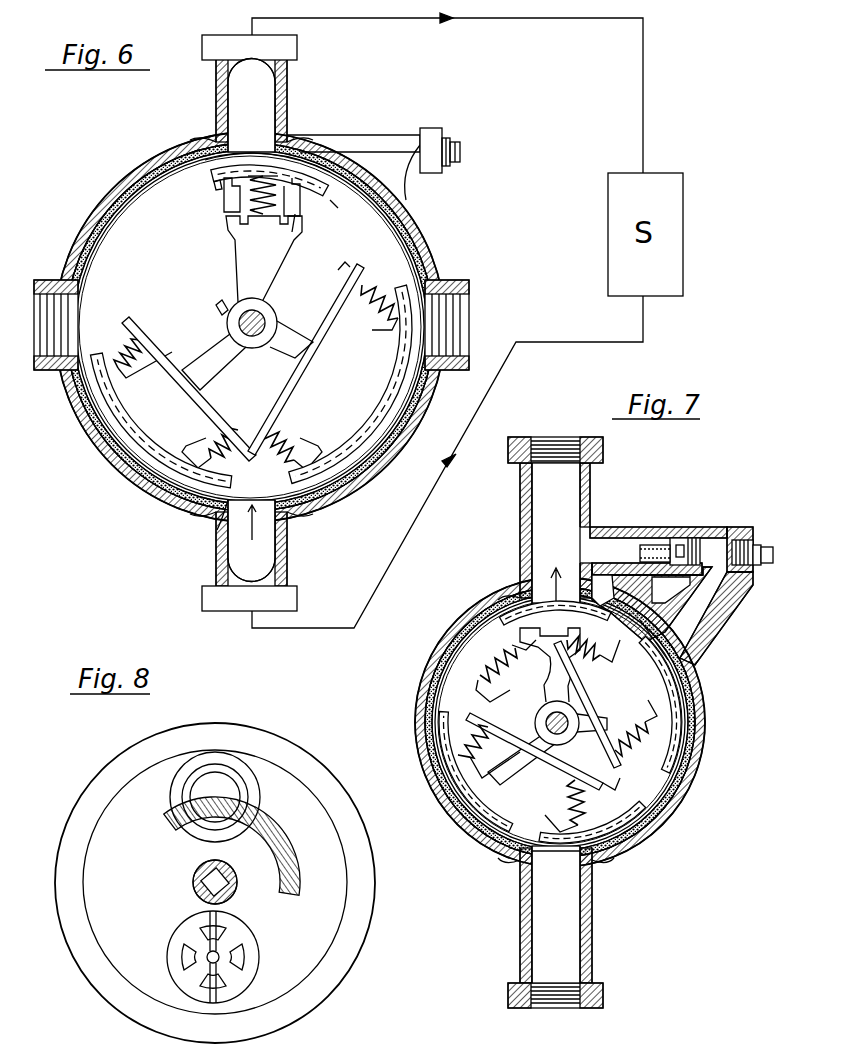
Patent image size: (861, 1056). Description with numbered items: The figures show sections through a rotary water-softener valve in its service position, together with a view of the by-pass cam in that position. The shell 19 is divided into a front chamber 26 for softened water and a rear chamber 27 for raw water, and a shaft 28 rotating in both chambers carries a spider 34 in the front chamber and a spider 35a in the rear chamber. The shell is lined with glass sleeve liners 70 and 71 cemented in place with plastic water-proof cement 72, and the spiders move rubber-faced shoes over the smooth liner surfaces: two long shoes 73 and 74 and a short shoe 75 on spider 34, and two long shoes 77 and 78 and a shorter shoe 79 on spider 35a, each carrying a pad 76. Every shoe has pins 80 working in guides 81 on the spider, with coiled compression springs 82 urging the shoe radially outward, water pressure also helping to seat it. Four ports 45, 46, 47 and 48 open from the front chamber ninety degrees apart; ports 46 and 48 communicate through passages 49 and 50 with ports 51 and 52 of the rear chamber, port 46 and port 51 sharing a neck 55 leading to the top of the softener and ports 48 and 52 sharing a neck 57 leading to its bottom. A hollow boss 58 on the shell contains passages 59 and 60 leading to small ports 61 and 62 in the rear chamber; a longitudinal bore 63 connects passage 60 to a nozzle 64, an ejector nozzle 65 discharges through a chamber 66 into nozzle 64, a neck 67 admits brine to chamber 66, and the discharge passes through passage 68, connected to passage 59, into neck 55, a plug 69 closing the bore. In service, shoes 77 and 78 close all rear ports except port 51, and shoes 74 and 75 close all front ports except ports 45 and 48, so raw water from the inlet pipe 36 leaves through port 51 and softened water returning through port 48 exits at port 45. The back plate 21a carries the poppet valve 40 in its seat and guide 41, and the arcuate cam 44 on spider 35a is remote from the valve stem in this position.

In FIG. 6, the shell 19 is at (428, 252).
In FIG. 7, the shell 19 is at (694, 706).
In FIG. 8, the back plate 21a is at (345, 978).
In FIG. 6, the front chamber 26 is at (250, 327).
In FIG. 7, the rear chamber 27 is at (564, 715).
In FIG. 6, the shaft 28 is at (258, 320).
In FIG. 7, the shaft 28 is at (565, 730).
In FIG. 8, the shaft 28 is at (232, 890).
In FIG. 6, the spider 34 is at (262, 268).
In FIG. 7, the spider 35a is at (540, 708).
In FIG. 8, the spider 35a is at (195, 892).
In FIG. 8, the raw water inlet pipe 36 is at (247, 785).
In FIG. 8, the poppet valve 40 is at (222, 957).
In FIG. 8, the combination valve seat and guide 41 is at (255, 964).
In FIG. 8, the arcuate cam 44 is at (292, 862).
In FIG. 6, the port 45 is at (90, 340).
In FIG. 6, the port 46 is at (255, 138).
In FIG. 6, the port 47 is at (432, 345).
In FIG. 6, the port 48 is at (226, 530).
In FIG. 6, the passage 49 is at (272, 92).
In FIG. 6, the passage 50 is at (266, 546).
In FIG. 7, the port 51 is at (545, 593).
In FIG. 7, the port 52 is at (565, 858).
In FIG. 6, the neck 55 is at (216, 95).
In FIG. 7, the neck 55 is at (520, 488).
In FIG. 6, the neck 57 is at (285, 574).
In FIG. 7, the neck 57 is at (520, 916).
In FIG. 6, the hollow boss 58 is at (370, 135).
In FIG. 7, the hollow boss 58 is at (620, 527).
In FIG. 7, the passage 59 is at (652, 602).
In FIG. 7, the passage 60 is at (716, 618).
In FIG. 7, the port 61 is at (628, 620).
In FIG. 7, the port 62 is at (650, 660).
In FIG. 7, the longitudinal bore 63 is at (712, 530).
In FIG. 7, the nozzle 64 is at (640, 549).
In FIG. 7, the nozzle 65 is at (686, 538).
In FIG. 7, the chamber 66 is at (670, 565).
In FIG. 7, the neck 67 is at (662, 527).
In FIG. 7, the passage 68 is at (578, 540).
In FIG. 6, the plug 69 is at (456, 140).
In FIG. 7, the plug 69 is at (768, 563).
In FIG. 6, the glass sleeve liner 70 is at (100, 228).
In FIG. 7, the glass sleeve liner 71 is at (439, 722).
In FIG. 6, the plastic water-proof cement 72 is at (372, 470).
In FIG. 7, the plastic water-proof cement 72 is at (672, 800).
In FIG. 6, the long shoe 73 is at (132, 435).
In FIG. 6, the long shoe 74 is at (382, 408).
In FIG. 6, the short shoe 75 is at (214, 181).
In FIG. 6, the pad 76 is at (178, 430).
In FIG. 7, the pad 76 is at (640, 658).
In FIG. 7, the long shoe 77 is at (488, 810).
In FIG. 7, the long shoe 78 is at (648, 682).
In FIG. 7, the shorter shoe 79 is at (535, 612).
In FIG. 6, the pins 80 is at (296, 198).
In FIG. 7, the pins 80 is at (592, 774).
In FIG. 6, the guides 81 is at (292, 225).
In FIG. 7, the guides 81 is at (585, 750).
In FIG. 6, the coiled compression springs 82 is at (258, 200).
In FIG. 7, the coiled compression springs 82 is at (585, 808).